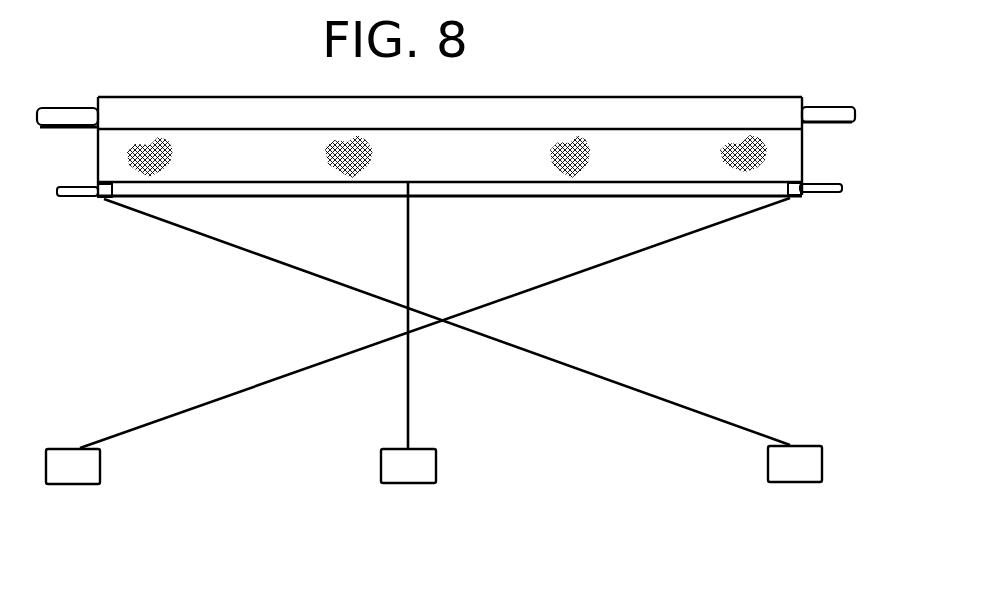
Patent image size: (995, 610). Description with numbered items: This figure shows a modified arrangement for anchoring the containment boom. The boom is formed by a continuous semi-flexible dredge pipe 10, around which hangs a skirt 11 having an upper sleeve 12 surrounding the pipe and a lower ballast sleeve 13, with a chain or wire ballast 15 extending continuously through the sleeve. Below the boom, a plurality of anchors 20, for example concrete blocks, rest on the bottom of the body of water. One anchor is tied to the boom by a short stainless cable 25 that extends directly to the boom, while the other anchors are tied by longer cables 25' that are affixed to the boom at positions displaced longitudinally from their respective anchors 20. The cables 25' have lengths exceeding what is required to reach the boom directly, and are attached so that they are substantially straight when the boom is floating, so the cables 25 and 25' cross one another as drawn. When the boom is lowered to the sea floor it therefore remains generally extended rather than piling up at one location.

The semi-flexible dredge pipe 10 is at (848, 105).
The skirt 11 is at (778, 157).
The upper sleeve 12 is at (657, 108).
The ballast sleeve 13 is at (372, 200).
The cable ballast 15 is at (816, 193).
The anchor 20 is at (100, 470).
The stainless cable 25 is at (434, 315).
The longitudinally displaced cable 25' is at (435, 323).